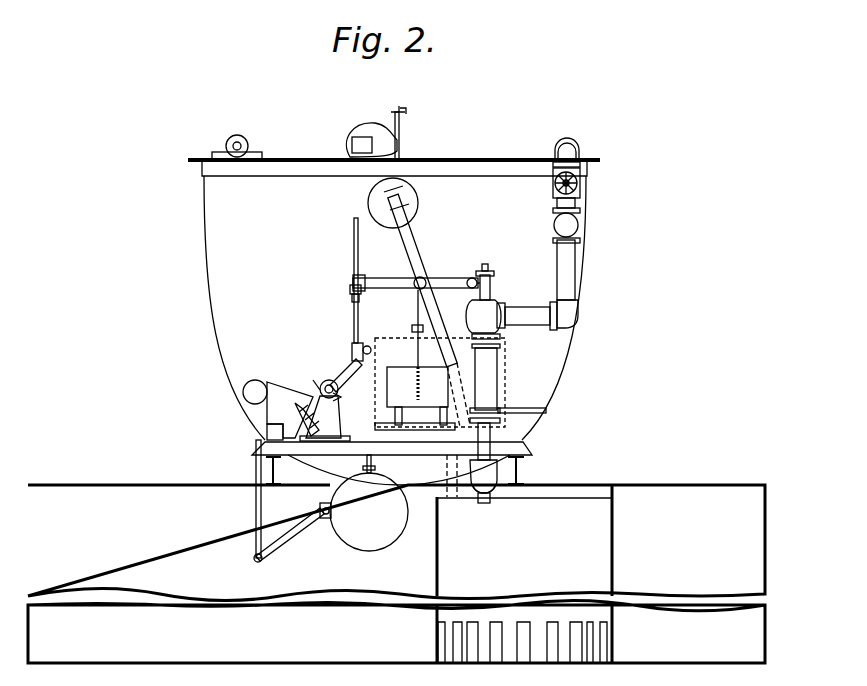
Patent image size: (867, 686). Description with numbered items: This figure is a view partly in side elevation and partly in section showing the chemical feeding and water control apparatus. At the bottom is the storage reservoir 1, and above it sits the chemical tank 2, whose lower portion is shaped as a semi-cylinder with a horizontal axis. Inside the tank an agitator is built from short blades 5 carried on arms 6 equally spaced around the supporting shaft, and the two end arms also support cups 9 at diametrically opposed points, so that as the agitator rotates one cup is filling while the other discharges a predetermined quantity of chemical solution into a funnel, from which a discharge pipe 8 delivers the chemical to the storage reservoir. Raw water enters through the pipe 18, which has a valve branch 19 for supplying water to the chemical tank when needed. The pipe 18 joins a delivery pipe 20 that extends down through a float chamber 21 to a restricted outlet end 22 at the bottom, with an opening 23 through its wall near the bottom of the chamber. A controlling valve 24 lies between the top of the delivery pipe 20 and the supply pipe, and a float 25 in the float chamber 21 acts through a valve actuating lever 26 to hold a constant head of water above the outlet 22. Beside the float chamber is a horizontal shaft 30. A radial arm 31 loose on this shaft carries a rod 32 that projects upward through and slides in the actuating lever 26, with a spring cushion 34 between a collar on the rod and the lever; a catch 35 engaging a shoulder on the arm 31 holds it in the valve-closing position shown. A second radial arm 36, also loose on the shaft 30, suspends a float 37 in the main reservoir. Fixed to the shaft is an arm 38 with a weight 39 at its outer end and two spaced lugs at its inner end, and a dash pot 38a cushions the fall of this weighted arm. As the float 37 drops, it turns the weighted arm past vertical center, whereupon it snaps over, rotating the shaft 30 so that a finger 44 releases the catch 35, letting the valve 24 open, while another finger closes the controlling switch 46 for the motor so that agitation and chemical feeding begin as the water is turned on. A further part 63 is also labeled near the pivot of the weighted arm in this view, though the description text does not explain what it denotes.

The storage reservoir 1 is at (746, 485).
The chemical tank 2 is at (578, 352).
The short blades 5 is at (400, 115).
The arms 6 is at (399, 152).
The discharge pipe 8 is at (413, 244).
The cups 9 is at (371, 131).
The pipe 18 is at (570, 226).
The valve branch 19 is at (567, 152).
The delivery pipe 20 is at (499, 380).
The float chamber 21 is at (500, 402).
The restricted outlet end 22 is at (489, 505).
The opening 23 is at (546, 411).
The controlling valve 24 is at (486, 312).
The float 25 is at (442, 370).
The valve actuating lever 26 is at (445, 278).
The horizontal shaft 30 is at (327, 380).
The radial arm 31 is at (345, 375).
The rod 32 is at (354, 320).
The spring cushion 34 is at (350, 289).
The catch 35 is at (328, 411).
The second radial arm 36 is at (364, 346).
The float 37 is at (364, 503).
The arm 38 is at (295, 383).
The dash pot 38a is at (260, 442).
The weight 39 is at (253, 379).
The finger 44 is at (341, 397).
The controlling switch 46 is at (275, 410).
The pin 63 is at (313, 380).